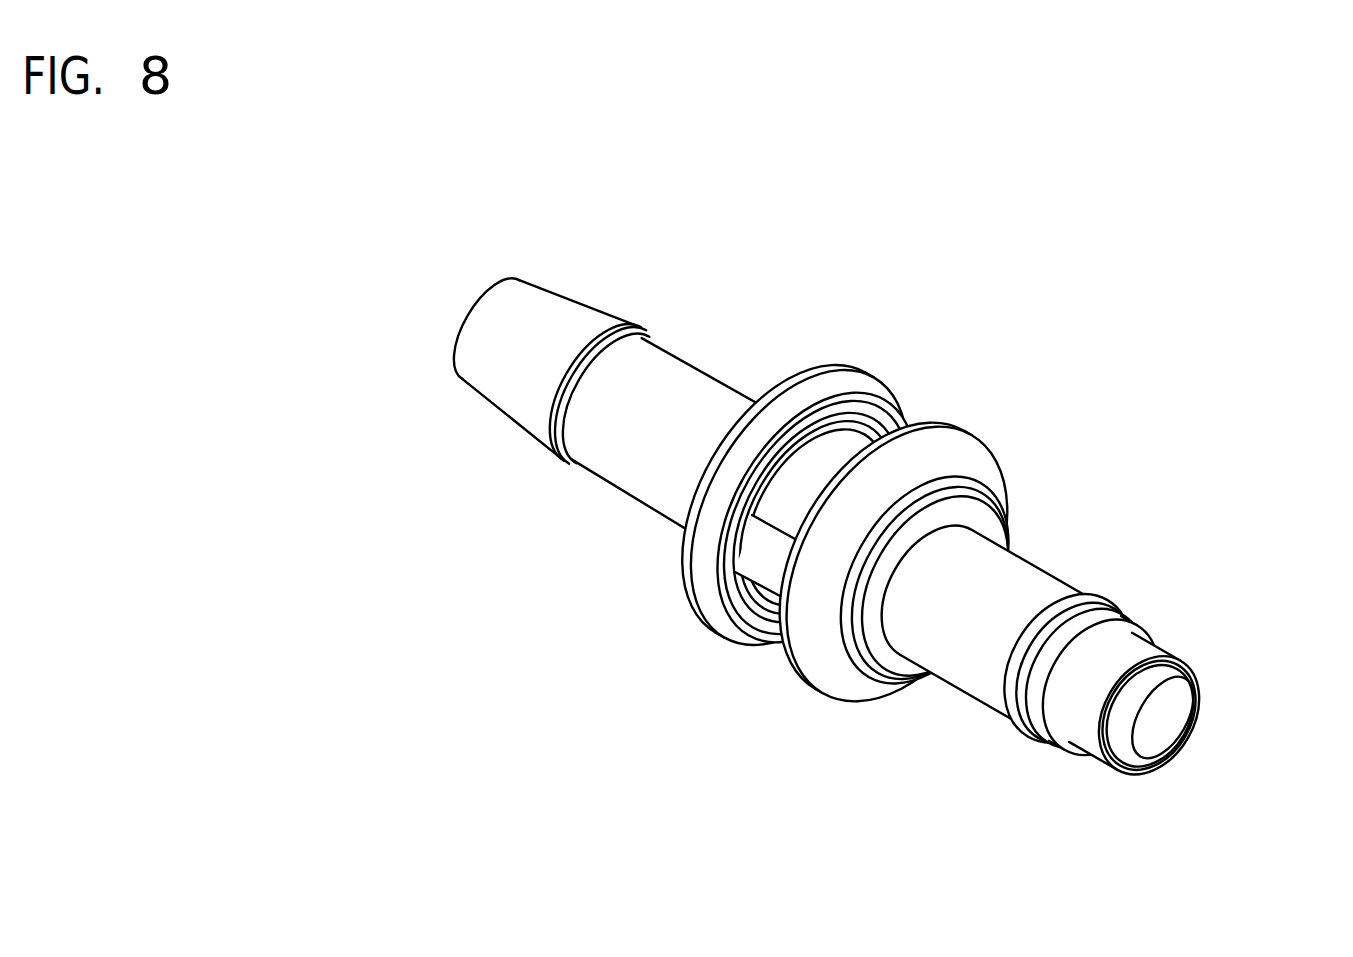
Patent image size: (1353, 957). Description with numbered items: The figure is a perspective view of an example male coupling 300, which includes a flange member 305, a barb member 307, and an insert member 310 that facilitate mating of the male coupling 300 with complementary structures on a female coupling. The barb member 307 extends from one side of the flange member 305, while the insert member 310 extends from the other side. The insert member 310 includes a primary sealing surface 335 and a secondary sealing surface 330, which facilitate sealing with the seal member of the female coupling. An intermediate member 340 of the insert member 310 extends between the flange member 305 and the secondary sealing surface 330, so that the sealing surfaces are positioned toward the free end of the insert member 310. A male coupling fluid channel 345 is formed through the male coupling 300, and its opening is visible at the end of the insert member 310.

The male coupling 300 is at (880, 479).
The flange member 305 is at (696, 446).
The barb member 307 is at (545, 322).
The insert member 310 is at (1032, 624).
The secondary sealing surface 330 is at (1200, 685).
The primary sealing surface 335 is at (1193, 676).
The intermediate member 340 is at (983, 575).
The male coupling fluid channel 345 is at (1175, 733).